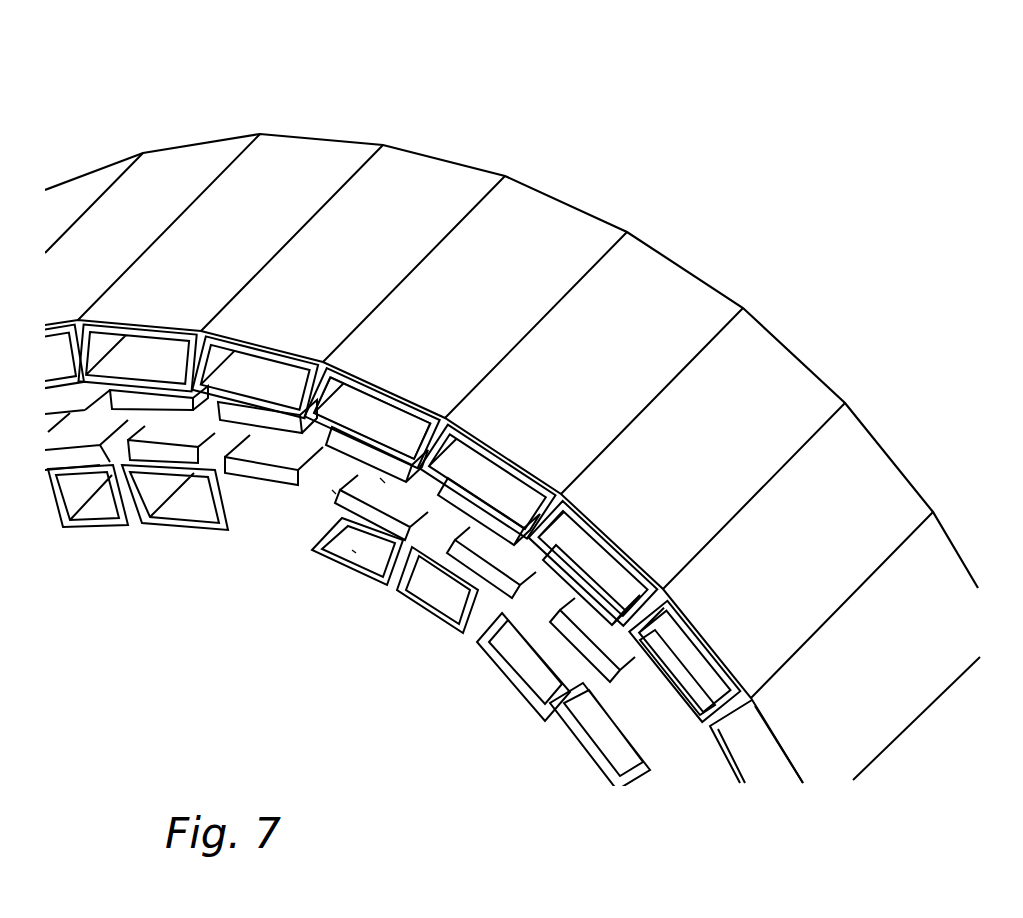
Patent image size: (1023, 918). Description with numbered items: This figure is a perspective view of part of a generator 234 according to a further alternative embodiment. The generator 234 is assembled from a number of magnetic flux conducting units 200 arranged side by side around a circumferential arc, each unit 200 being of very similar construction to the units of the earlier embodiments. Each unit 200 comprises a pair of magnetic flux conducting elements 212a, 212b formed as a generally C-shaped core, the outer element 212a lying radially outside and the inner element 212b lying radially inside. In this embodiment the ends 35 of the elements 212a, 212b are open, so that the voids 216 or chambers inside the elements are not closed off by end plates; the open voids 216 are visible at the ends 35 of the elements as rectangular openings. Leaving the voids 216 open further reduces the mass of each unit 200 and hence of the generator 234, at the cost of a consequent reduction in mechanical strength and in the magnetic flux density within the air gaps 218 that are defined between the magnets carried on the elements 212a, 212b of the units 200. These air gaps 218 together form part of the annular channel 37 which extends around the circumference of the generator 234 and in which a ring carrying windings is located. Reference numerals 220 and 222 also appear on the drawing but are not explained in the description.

The magnetic flux conducting unit 200 is at (632, 137).
The magnetic flux conducting element 212a is at (522, 203).
The magnetic flux conducting element 212b is at (345, 570).
The void 216 is at (401, 558).
The air gap 218 is at (332, 490).
The slot 220 is at (350, 443).
The gap 222 is at (380, 478).
The generator 234 is at (885, 198).
The end 35 is at (427, 397).
The annular channel 37 is at (263, 445).